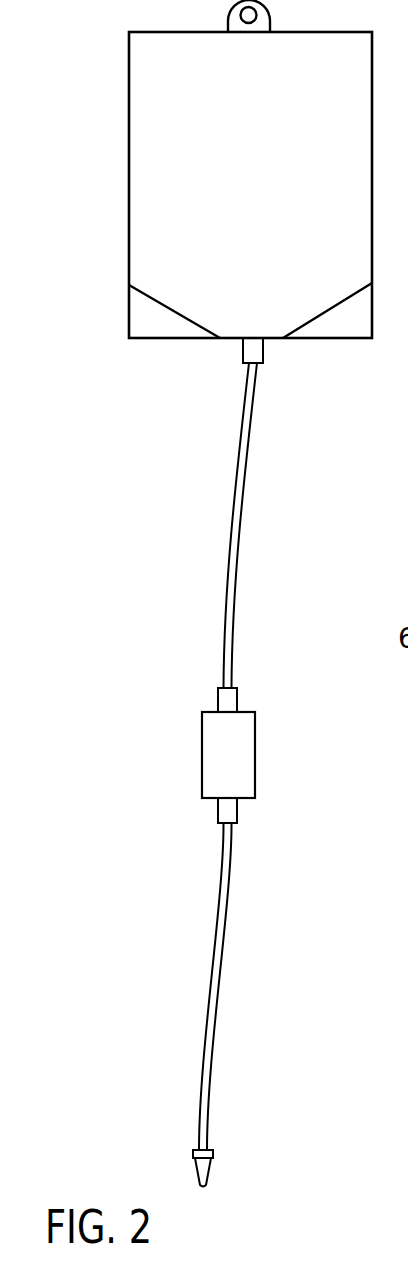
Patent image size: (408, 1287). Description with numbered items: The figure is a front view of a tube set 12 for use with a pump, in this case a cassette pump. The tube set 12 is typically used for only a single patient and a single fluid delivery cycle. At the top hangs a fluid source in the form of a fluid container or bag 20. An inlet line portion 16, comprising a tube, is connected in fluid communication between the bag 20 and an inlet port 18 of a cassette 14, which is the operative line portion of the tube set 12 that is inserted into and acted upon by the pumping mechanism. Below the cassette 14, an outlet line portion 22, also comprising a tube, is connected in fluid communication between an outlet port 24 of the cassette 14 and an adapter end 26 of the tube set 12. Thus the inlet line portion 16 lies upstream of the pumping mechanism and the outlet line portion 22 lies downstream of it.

The tube set 12 is at (92, 522).
The fluid container or bag 20 is at (129, 211).
The inlet line portion 16 is at (237, 477).
The inlet port 18 is at (218, 699).
The cassette 14 is at (202, 765).
The outlet port 24 is at (218, 812).
The outlet line portion 22 is at (217, 918).
The adapter end 26 is at (197, 1175).